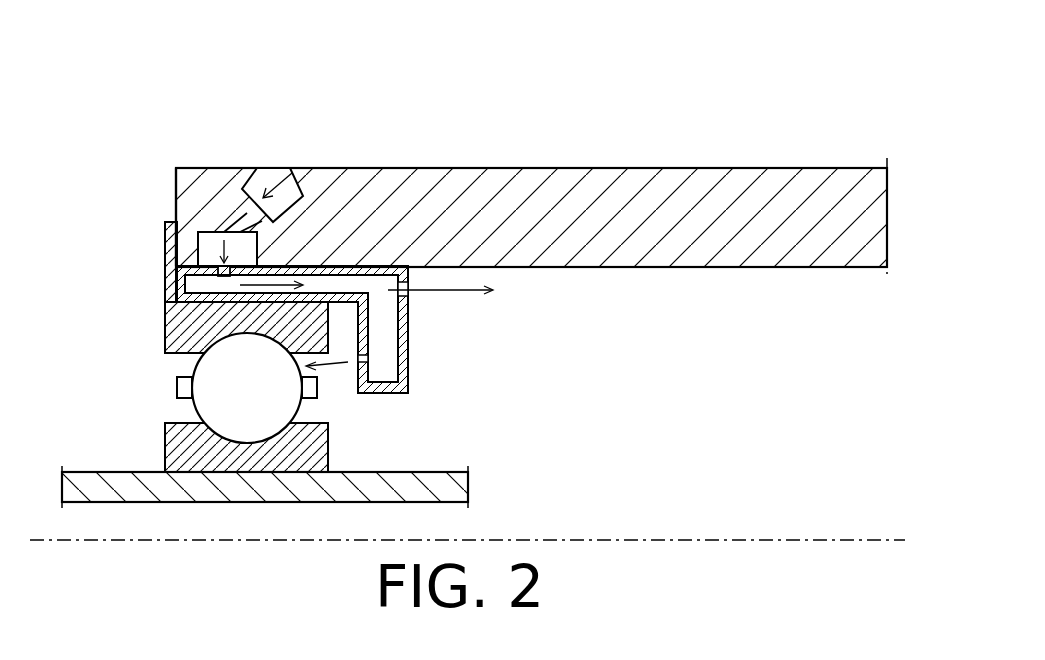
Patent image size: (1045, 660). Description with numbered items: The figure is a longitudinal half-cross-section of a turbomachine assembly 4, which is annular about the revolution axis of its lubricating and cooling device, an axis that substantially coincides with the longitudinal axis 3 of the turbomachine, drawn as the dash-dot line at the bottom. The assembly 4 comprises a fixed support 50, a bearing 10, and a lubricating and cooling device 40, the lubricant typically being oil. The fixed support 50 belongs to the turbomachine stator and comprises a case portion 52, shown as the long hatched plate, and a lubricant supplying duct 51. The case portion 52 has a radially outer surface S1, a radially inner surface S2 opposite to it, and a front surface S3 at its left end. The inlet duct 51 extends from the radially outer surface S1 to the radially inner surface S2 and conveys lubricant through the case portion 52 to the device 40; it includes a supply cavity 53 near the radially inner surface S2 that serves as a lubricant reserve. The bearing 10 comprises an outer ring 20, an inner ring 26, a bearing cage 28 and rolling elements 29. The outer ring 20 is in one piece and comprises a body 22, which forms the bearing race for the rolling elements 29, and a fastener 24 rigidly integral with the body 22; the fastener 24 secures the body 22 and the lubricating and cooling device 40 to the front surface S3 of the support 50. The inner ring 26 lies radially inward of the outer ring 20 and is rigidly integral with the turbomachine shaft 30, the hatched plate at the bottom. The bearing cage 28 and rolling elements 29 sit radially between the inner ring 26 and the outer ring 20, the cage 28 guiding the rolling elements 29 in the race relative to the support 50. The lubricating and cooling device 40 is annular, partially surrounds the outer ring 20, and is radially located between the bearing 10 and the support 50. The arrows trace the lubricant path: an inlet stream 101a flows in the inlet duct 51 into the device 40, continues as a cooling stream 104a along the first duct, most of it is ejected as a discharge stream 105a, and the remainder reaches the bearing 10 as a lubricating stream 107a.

The turbomachine assembly 4 is at (584, 133).
The bearing 10 is at (175, 328).
The outer ring 20 is at (168, 312).
The body 22 is at (323, 325).
The fastener 24 is at (165, 237).
The inner ring 26 is at (166, 455).
The bearing cage 28 is at (178, 388).
The rolling elements 29 is at (215, 407).
The turbomachine shaft 30 is at (455, 488).
The lubricating and cooling device 40 is at (414, 311).
The fixed support 50 is at (804, 187).
The lubricant supplying duct 51 is at (268, 170).
The case portion 52 is at (884, 197).
The supply cavity 53 is at (203, 236).
The inlet stream 101a is at (293, 172).
The cooling stream 104a is at (265, 230).
The discharge stream 105a is at (493, 290).
The lubricating stream 107a is at (348, 364).
The radially outer surface S1 is at (668, 168).
The radially inner surface S2 is at (836, 270).
The front surface S3 is at (176, 172).
The longitudinal axis 3 is at (862, 538).